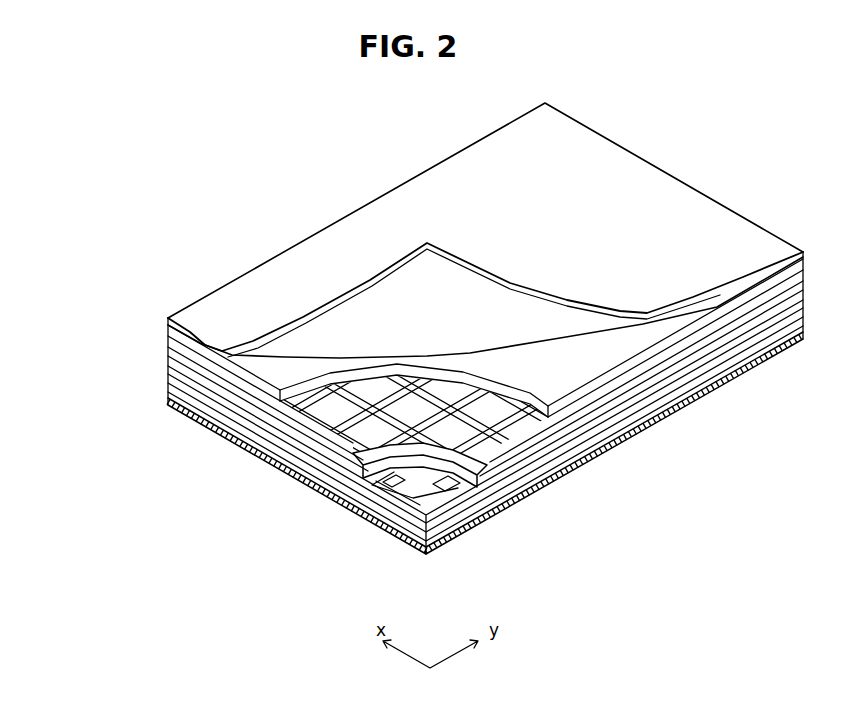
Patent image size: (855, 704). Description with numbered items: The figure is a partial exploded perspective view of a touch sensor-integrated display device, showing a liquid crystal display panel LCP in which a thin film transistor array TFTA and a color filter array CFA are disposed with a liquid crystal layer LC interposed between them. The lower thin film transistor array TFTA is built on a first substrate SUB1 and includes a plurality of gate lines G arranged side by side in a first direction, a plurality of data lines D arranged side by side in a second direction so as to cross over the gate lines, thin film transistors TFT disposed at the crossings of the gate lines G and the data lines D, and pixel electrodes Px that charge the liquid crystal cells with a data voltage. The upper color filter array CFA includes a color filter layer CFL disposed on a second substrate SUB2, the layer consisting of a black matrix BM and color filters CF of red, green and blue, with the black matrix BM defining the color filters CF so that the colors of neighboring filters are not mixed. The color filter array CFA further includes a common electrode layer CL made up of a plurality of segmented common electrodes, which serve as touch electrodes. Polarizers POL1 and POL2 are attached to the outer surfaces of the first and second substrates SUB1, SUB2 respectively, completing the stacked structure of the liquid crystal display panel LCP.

The polarizer POL2 is at (168, 322).
The second substrate SUB2 is at (168, 330).
The color filter array CFL is at (445, 345).
The common electrode layer CL is at (451, 383).
The liquid crystal layer LC is at (168, 364).
The first substrate SUB1 is at (173, 388).
The polarizer POL1 is at (190, 413).
The color filter array CFA is at (413, 335).
The liquid crystal display panel LCP is at (408, 349).
The thin film transistor array TFTA is at (437, 360).
The color filters CF is at (323, 402).
The black matrix BM is at (393, 384).
The thin film transistor TFT is at (385, 482).
The pixel electrode Px is at (395, 497).
The data line D is at (428, 482).
The gate line G is at (450, 488).